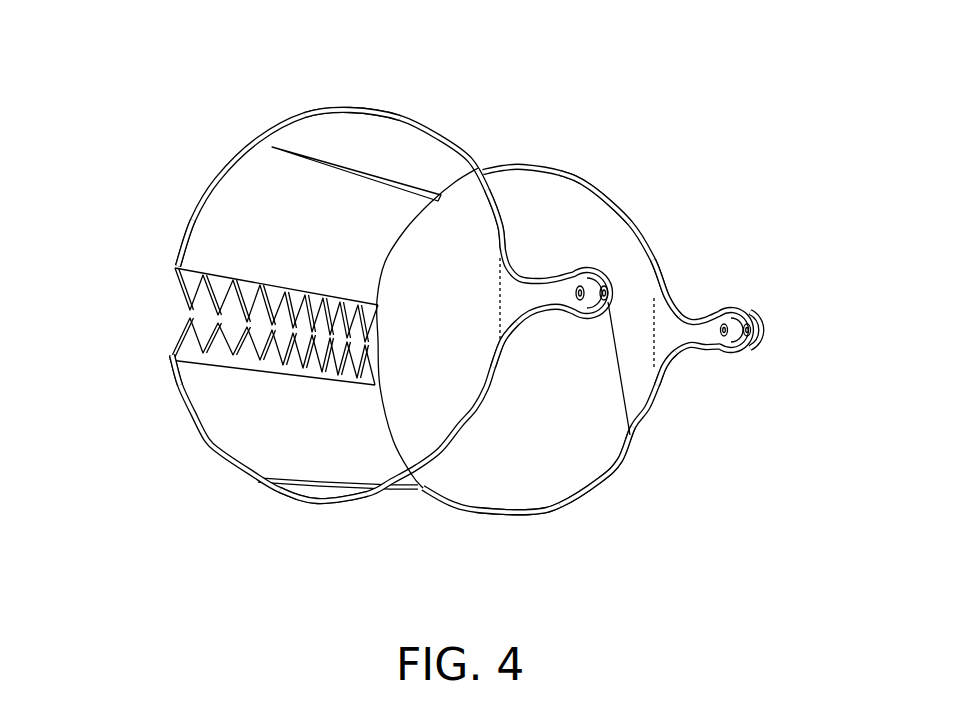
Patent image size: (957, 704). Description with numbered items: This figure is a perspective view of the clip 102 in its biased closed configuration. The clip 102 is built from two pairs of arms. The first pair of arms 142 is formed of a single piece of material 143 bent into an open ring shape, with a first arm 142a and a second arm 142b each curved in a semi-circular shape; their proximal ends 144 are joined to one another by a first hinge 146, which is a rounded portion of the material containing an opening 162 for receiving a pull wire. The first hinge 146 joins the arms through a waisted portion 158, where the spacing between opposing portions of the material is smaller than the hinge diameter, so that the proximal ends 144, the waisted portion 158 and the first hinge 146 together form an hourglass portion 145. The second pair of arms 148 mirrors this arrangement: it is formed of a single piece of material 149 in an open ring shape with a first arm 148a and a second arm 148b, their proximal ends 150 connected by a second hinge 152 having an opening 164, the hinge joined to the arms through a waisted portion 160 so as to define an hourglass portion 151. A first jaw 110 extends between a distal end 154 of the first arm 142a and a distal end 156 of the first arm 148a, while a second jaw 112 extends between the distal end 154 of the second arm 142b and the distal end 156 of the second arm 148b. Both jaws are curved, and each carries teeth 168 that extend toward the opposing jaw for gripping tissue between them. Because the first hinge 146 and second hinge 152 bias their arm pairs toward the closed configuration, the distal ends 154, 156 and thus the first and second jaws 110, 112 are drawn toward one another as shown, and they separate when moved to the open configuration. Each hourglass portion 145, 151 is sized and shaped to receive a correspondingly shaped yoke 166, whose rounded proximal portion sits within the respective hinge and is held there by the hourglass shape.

The clip 102 is at (603, 97).
The first jaw 110 is at (295, 186).
The second jaw 112 is at (270, 452).
The first pair of arms 142 is at (396, 492).
The first arm of the first pair of arms 142a is at (384, 111).
The second arm of the first pair of arms 142b is at (310, 504).
The single piece of material 143 is at (321, 112).
The proximal ends of the first pair of arms 144 is at (503, 232).
The hourglass portion 145 is at (513, 263).
The first hinge 146 is at (600, 276).
The second pair of arms 148 is at (471, 513).
The first arm of the second pair of arms 148a is at (600, 191).
The second arm of the second pair of arms 148b is at (531, 514).
The single piece of material 149 is at (601, 481).
The proximal ends of the second pair of arms 150 is at (657, 282).
The hourglass portion 151 is at (672, 300).
The second hinge 152 is at (743, 312).
The distal ends of the first pair of arms 154 is at (196, 252).
The distal ends of the second pair of arms 156 is at (372, 294).
The waisted portion 158 is at (540, 318).
The waisted portion 160 is at (698, 350).
The opening 162 is at (635, 429).
The opening 164 is at (750, 328).
The yoke 166 is at (513, 293).
The teeth 168 is at (208, 305).